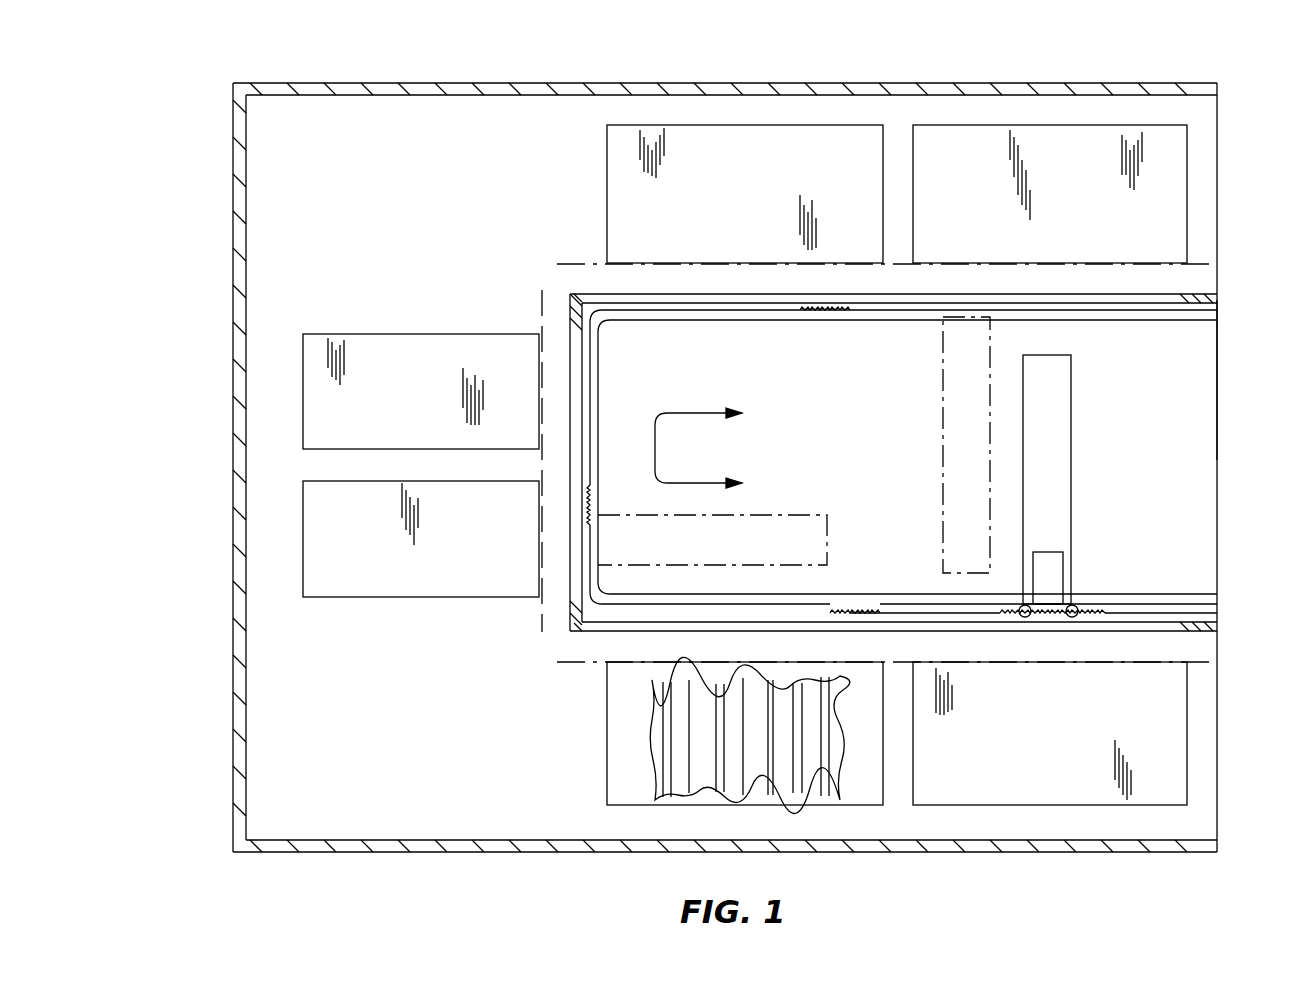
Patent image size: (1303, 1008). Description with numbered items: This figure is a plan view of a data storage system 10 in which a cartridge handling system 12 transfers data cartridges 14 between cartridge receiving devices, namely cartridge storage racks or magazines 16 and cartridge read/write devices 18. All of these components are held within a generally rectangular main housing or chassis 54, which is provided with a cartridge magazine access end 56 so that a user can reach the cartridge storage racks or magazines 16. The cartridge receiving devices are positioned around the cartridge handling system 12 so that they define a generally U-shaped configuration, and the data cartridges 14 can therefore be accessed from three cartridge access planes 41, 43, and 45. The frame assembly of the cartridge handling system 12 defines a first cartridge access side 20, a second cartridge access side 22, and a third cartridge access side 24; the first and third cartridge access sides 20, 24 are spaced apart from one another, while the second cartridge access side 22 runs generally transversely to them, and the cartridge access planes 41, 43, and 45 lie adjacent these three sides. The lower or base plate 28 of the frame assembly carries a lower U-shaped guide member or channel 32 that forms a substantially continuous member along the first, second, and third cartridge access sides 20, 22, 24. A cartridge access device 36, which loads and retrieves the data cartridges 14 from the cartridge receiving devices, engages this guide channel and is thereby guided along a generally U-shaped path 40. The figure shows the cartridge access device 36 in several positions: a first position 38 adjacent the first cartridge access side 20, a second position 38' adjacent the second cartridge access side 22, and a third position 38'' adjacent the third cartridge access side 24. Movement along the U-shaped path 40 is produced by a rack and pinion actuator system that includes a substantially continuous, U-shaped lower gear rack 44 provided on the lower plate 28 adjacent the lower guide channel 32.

The data storage system 10 is at (188, 98).
The cartridge handling system 12 is at (1232, 382).
The data cartridges 14 is at (687, 763).
The cartridge storage racks or magazines 16 is at (934, 125).
The cartridge read/write devices 18 is at (335, 481).
The first cartridge access side 20 is at (1162, 628).
The second cartridge access side 22 is at (568, 620).
The third cartridge access side 24 is at (1158, 294).
The lower or base plate 28 is at (823, 423).
The lower U-shaped guide member or channel 32 is at (599, 370).
The cartridge access device 36 is at (1085, 459).
The first position 38 is at (1082, 486).
The second position 38' is at (730, 520).
The third position 38'' is at (942, 445).
The U-shaped path 40 is at (657, 447).
The cartridge access plane 41 is at (580, 664).
The cartridge access plane 43 is at (540, 298).
The lower gear rack 44 is at (862, 611).
The cartridge access plane 45 is at (576, 262).
The main housing or chassis 54 is at (573, 74).
The cartridge magazine access end 56 is at (1217, 175).